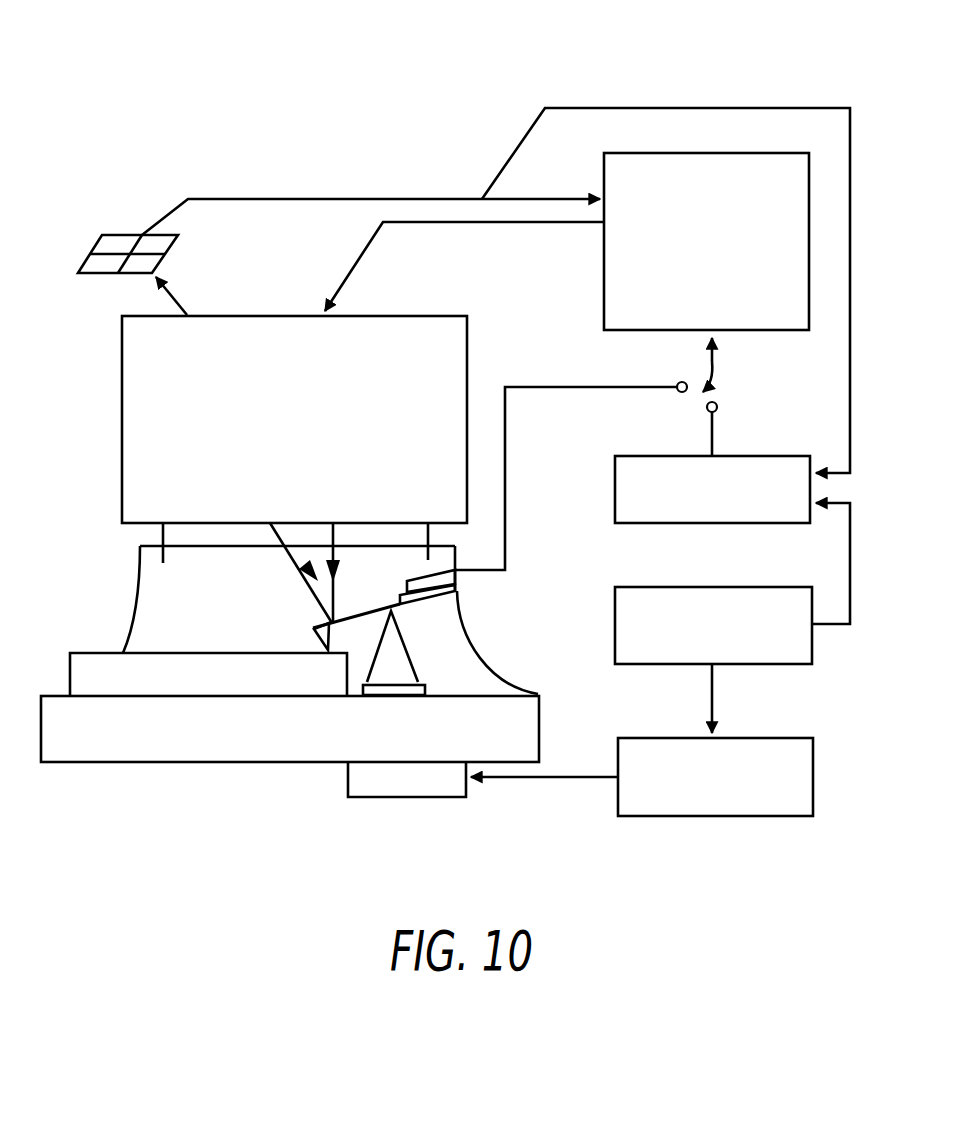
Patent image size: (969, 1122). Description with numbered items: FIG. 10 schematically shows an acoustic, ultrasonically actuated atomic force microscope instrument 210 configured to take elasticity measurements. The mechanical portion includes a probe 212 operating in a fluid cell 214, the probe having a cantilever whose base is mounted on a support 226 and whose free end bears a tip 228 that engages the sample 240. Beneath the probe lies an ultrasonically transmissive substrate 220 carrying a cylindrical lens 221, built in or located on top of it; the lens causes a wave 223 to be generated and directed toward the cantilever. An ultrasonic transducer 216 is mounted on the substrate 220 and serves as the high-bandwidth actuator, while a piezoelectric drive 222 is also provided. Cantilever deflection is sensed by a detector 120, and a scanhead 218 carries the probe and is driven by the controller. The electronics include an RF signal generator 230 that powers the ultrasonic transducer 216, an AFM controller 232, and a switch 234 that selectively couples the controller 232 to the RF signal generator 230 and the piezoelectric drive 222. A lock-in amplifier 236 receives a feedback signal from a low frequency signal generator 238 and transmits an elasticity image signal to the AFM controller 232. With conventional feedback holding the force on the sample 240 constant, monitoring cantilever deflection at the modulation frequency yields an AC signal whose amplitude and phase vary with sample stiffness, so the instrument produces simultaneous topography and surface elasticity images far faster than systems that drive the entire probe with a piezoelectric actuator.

The instrument 210 is at (476, 76).
The detector 120 is at (118, 233).
The scanhead 218 is at (422, 316).
The AFM controller 232 is at (735, 153).
The switch 234 is at (714, 366).
The lock-in amplifier 236 is at (742, 456).
The low frequency signal generator 238 is at (753, 587).
The RF signal generator 230 is at (755, 738).
The fluid cell 214 is at (497, 671).
The probe 212 is at (355, 611).
The tip 228 is at (315, 633).
The piezoelectric drive 222 is at (457, 572).
The support 226 is at (458, 591).
The wave 223 is at (410, 669).
The cylindrical lens 221 is at (395, 695).
The sample 240 is at (91, 652).
The substrate 220 is at (540, 726).
The ultrasonic transducer 216 is at (403, 798).